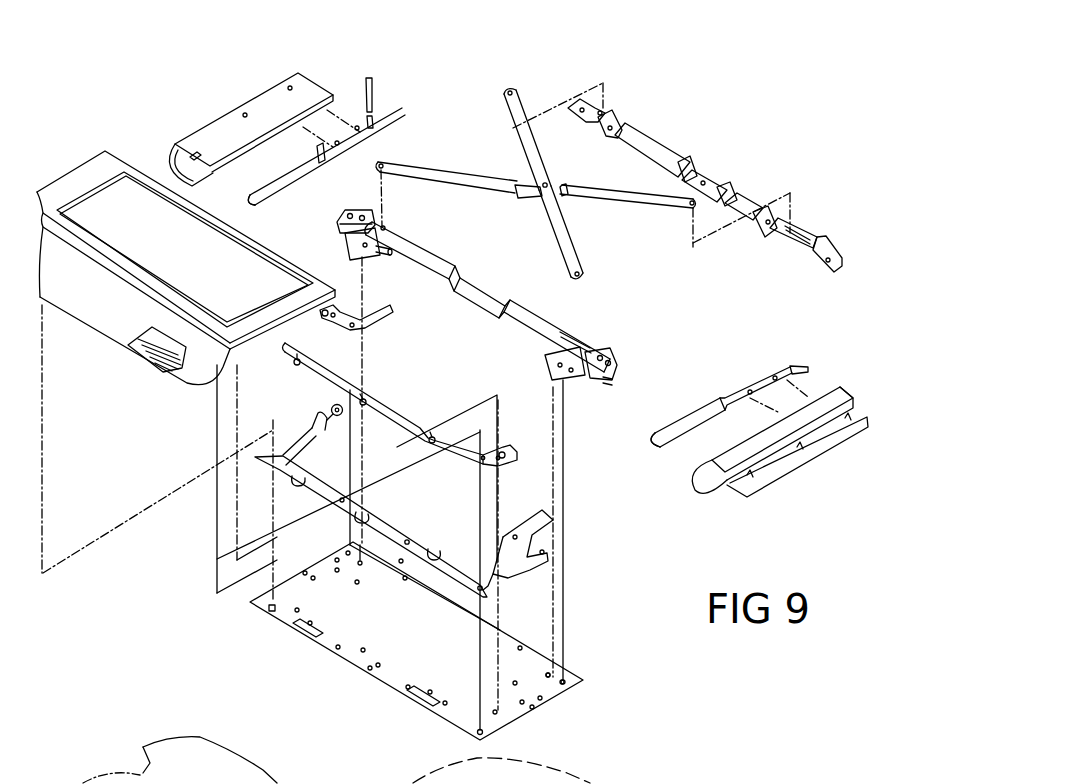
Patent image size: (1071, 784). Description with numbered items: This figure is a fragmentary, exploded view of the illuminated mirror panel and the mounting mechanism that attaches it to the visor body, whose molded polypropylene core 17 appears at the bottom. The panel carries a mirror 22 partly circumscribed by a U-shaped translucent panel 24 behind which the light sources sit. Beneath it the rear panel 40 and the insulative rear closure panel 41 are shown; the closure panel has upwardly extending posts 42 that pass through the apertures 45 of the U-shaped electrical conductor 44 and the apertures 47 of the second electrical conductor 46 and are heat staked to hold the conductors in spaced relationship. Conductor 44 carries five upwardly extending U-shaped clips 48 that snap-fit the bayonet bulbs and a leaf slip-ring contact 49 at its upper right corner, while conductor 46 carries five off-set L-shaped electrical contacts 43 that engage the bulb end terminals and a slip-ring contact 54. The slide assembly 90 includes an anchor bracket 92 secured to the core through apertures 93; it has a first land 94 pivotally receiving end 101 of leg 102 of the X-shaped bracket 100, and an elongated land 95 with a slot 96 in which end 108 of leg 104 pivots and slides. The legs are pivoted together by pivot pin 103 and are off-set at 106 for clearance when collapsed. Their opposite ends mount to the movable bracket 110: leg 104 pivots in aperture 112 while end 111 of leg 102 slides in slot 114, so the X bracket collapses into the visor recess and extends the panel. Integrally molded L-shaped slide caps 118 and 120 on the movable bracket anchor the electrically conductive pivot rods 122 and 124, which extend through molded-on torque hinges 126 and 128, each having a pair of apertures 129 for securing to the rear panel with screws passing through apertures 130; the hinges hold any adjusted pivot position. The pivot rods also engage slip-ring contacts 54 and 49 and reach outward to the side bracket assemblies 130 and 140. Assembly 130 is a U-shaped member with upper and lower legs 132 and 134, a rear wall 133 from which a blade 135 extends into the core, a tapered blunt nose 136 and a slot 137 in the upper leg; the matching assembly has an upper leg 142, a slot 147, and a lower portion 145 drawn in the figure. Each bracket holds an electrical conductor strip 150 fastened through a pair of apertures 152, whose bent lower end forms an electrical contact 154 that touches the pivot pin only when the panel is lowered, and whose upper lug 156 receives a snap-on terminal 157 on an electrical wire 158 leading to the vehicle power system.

The core 17 is at (240, 753).
The mirror 22 is at (140, 234).
The translucent panel 24 is at (70, 190).
The rear panel 40 is at (86, 333).
The rear closure panel 41 is at (553, 700).
The posts 42 is at (271, 609).
The electrical contacts 43 is at (325, 318).
The electrical conductor 44 is at (544, 570).
The apertures 45 is at (336, 417).
The electrical conductor 46 is at (394, 390).
The apertures 47 is at (340, 501).
The U-shaped clips 48 is at (316, 418).
The leaf slip-ring contact 49 is at (556, 520).
The slip-ring contact 54 is at (372, 318).
The slide assembly 90 is at (641, 287).
The anchor bracket 92 is at (717, 165).
The apertures 93 is at (831, 254).
The first land 94 is at (602, 111).
The elongated land 95 is at (797, 230).
The slot 96 is at (803, 236).
The X-shaped bracket 100 is at (583, 164).
The end of leg 101 is at (509, 88).
The leg 102 is at (527, 140).
The pivot pin 103 is at (550, 184).
The leg 104 is at (475, 188).
The off-set 106 is at (562, 198).
The end of leg 108 is at (688, 206).
The movable bracket 110 is at (501, 271).
The end of leg 111 is at (556, 253).
The aperture 112 is at (386, 226).
The slot 114 is at (585, 341).
The slide cap 118 is at (337, 216).
The slide cap 120 is at (616, 360).
The pivot rod 122 is at (390, 257).
The pivot rod 124 is at (613, 382).
The torque hinge 126 is at (347, 245).
The torque hinge 128 is at (569, 384).
The apertures 129 is at (375, 250).
The side bracket assembly 130 is at (308, 58).
The upper leg 132 is at (308, 91).
The rear wall 133 is at (232, 121).
The lower leg 134 is at (330, 108).
The blade 135 is at (268, 90).
The tapered blunt nose 136 is at (166, 180).
The slot 137 is at (195, 152).
The side bracket assembly 140 is at (788, 437).
The upper leg 142 is at (827, 402).
The tray 145 is at (812, 453).
The slot 147 is at (693, 487).
The electrical conductor strip 150 is at (328, 150).
The apertures 152 is at (339, 143).
The electrical contact 154 is at (277, 183).
The lug 156 is at (798, 367).
The snap-on terminal 157 is at (373, 115).
The electrical wire 158 is at (372, 82).